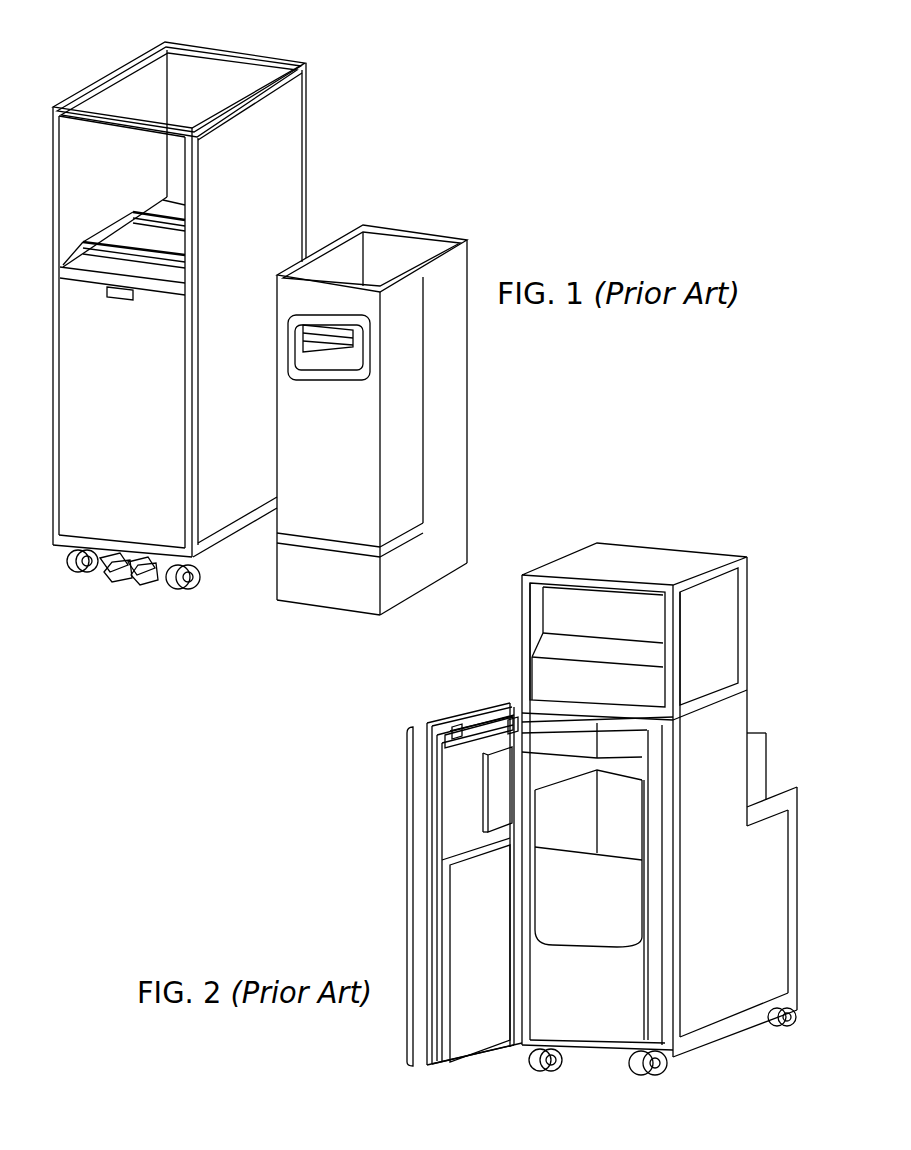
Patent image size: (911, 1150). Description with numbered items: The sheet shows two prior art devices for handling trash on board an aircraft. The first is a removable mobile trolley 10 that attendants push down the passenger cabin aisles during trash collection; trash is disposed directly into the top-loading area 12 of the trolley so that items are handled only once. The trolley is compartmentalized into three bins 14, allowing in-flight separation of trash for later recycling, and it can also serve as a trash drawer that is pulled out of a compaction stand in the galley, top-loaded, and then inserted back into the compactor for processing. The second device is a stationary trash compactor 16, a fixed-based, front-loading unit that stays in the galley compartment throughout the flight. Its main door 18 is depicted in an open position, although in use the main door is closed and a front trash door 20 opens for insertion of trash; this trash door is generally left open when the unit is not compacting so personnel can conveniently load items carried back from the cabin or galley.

In FIG. 1, the removable trolley 10 is at (73, 90).
In FIG. 1, the top-loading area 12 is at (232, 73).
In FIG. 1, the bins 14 is at (80, 258).
In FIG. 2, the stationary trash compactor 16 is at (786, 592).
In FIG. 2, the main door 18 is at (412, 893).
In FIG. 2, the front trash door 20 is at (478, 762).